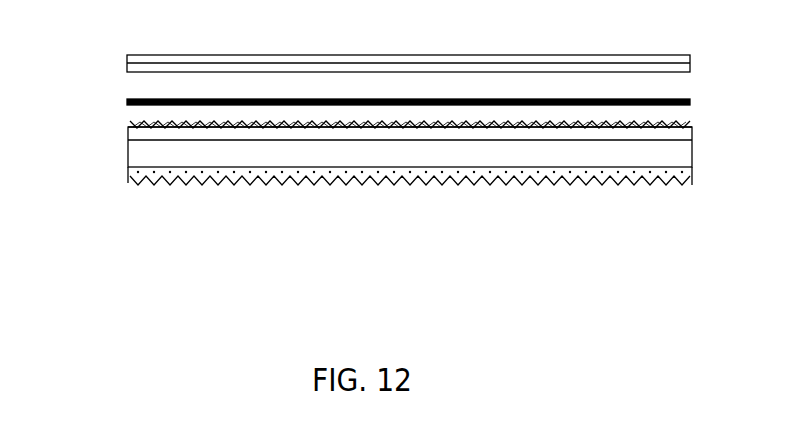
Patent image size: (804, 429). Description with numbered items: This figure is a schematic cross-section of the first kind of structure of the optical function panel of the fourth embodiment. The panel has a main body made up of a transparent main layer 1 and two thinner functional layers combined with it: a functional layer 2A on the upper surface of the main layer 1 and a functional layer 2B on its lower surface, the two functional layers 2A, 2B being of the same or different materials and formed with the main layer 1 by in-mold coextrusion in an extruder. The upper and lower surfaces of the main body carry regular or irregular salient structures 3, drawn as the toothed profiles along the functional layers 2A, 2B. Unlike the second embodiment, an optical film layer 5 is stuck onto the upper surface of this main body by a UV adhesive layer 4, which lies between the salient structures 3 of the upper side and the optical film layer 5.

The main layer 1 is at (683, 150).
The functional layer 2A is at (128, 125).
The functional layer 2B is at (128, 170).
The salient structures 3 is at (690, 122).
The UV adhesive layer 4 is at (690, 101).
The optical film layer 5 is at (690, 63).